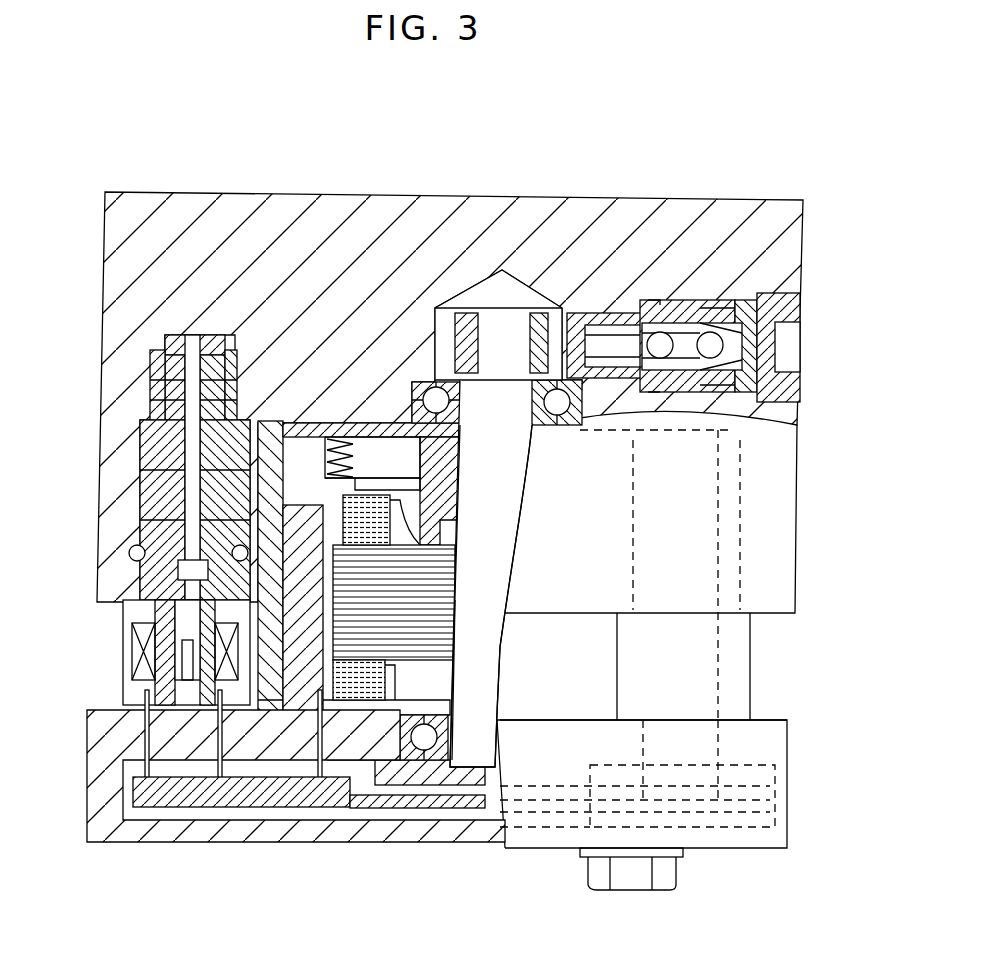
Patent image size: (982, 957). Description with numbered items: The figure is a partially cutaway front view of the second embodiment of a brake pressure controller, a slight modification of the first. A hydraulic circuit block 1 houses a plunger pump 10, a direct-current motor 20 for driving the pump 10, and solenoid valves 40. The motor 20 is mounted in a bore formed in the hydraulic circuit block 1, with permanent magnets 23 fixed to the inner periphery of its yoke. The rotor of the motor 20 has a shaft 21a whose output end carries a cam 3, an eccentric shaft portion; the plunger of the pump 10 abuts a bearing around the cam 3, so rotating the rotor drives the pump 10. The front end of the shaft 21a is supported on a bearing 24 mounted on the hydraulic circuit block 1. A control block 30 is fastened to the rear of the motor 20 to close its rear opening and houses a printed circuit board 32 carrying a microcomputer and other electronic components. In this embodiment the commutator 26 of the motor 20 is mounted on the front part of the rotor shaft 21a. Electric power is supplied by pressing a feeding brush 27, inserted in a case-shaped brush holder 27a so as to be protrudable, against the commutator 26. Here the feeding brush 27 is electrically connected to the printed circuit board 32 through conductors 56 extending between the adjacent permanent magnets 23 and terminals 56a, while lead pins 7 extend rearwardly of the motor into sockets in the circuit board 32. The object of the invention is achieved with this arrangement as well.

The hydraulic circuit block 1 is at (798, 486).
The cam 3 is at (498, 330).
The lead pins 7 is at (148, 737).
The plunger pump 10 is at (667, 293).
The direct-current motor 20 is at (257, 482).
The shaft 21a is at (475, 737).
The permanent magnets 23 is at (305, 677).
The bearing 24 is at (413, 380).
The commutator 26 is at (570, 380).
The feeding brush 27 is at (380, 457).
The brush holder 27a is at (326, 437).
The control block 30 is at (790, 790).
The printed circuit board 32 is at (423, 808).
The solenoid valves 40 is at (118, 657).
The conductors 56 is at (287, 421).
The terminals 56a is at (327, 780).